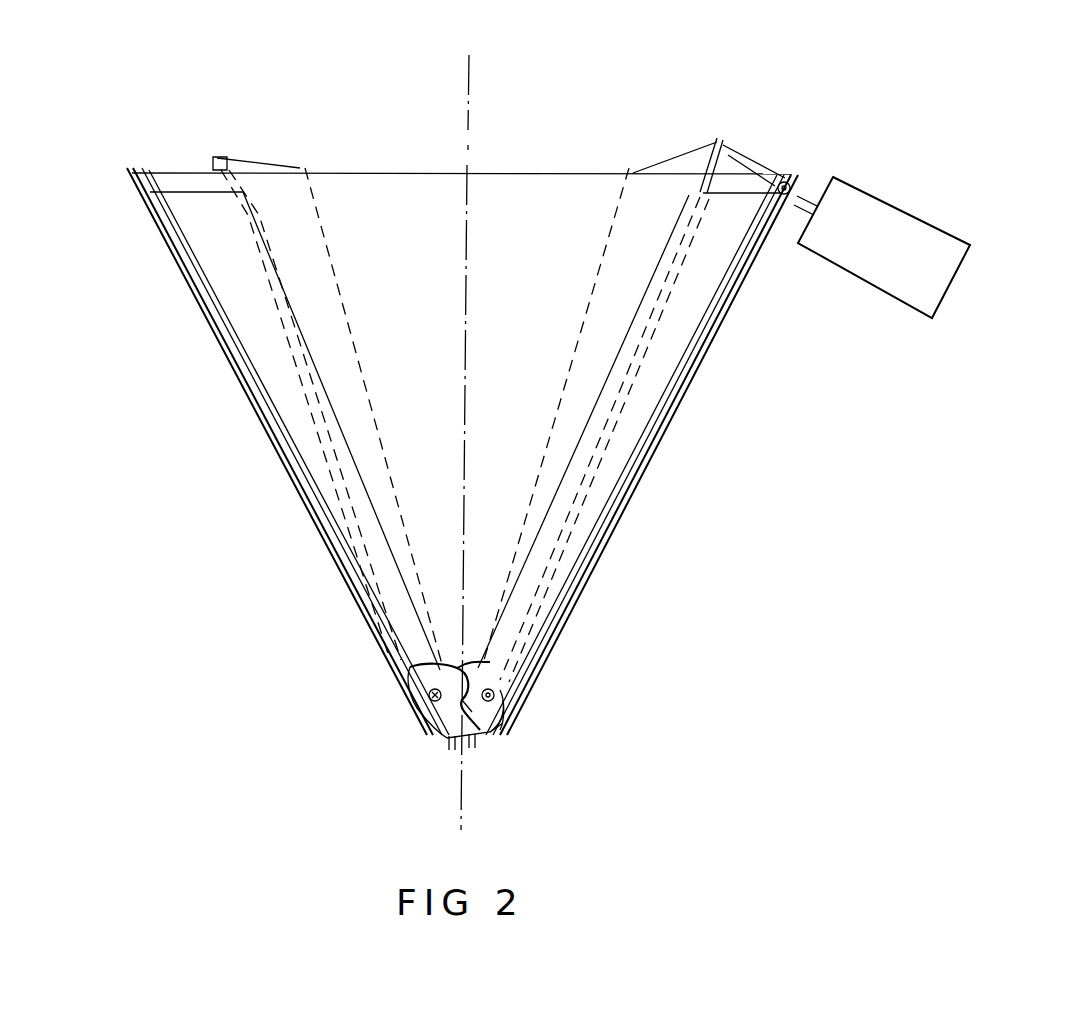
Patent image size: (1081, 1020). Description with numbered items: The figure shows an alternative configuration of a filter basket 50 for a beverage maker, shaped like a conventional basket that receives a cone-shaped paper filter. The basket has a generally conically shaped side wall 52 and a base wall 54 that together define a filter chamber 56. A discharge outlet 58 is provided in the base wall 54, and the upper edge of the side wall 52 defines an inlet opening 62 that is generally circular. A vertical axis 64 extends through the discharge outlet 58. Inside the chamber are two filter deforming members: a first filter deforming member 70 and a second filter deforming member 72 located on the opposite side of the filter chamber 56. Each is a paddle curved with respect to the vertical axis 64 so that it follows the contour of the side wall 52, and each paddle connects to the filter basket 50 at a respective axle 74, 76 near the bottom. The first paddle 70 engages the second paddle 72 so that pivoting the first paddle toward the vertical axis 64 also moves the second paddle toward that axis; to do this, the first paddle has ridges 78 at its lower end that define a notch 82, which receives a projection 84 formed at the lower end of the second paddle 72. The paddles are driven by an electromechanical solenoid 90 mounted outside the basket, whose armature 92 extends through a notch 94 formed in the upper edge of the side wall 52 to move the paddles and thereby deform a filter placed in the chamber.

The filter basket 50 is at (757, 412).
The side wall 52 is at (655, 450).
The base wall 54 is at (437, 746).
The filter chamber 56 is at (445, 418).
The discharge outlet 58 is at (455, 757).
The inlet opening 62 is at (445, 183).
The vertical axis 64 is at (478, 112).
The first filter deforming member 70 is at (547, 647).
The second filter deforming member 72 is at (272, 462).
The axle 74 is at (503, 723).
The axle 76 is at (429, 694).
The ridges 78 is at (468, 702).
The notch 82 is at (523, 690).
The projection 84 is at (447, 680).
The electromechanical solenoid 90 is at (917, 267).
The armature 92 is at (810, 190).
The notch 94 is at (780, 200).